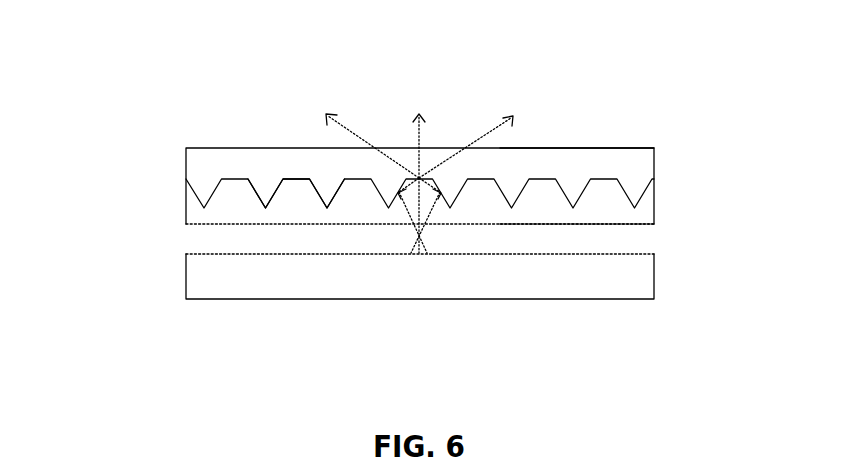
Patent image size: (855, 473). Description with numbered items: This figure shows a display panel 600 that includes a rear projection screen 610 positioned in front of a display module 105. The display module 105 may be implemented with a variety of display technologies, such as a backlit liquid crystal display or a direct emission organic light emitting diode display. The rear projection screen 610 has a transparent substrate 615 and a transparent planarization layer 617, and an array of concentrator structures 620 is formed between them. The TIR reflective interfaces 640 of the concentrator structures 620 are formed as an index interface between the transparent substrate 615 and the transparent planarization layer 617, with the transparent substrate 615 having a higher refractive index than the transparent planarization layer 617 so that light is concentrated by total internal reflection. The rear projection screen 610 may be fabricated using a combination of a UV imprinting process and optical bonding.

The display panel 600 is at (609, 51).
The rear projection screen 610 is at (665, 247).
The concentrator structures 620 is at (163, 193).
The TIR reflective interfaces 640 is at (327, 208).
The transparent substrate 615 is at (555, 213).
The transparent planarization layer 617 is at (585, 170).
The display module 105 is at (503, 285).